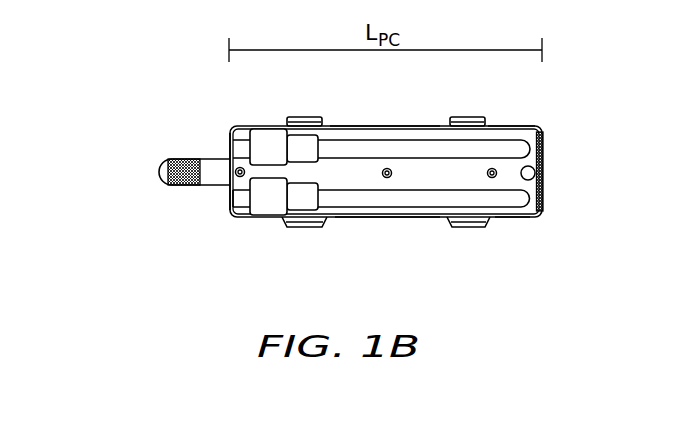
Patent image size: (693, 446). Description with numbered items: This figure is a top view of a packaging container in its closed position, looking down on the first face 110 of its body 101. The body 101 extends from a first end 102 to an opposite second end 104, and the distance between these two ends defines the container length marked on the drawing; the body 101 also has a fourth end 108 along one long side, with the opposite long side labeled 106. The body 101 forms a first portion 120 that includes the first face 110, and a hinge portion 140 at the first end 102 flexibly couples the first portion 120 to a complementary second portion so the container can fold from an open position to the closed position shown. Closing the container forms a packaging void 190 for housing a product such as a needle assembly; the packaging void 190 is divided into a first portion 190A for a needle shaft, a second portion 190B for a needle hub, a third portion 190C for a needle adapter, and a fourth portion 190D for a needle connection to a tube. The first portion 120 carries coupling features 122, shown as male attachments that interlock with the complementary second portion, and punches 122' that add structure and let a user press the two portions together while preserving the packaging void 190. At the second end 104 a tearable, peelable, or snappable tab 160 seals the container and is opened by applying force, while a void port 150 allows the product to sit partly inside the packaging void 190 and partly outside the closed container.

The body 101 is at (134, 89).
The first end 102 is at (542, 128).
The second end 104 is at (230, 131).
The bottom side 106 is at (412, 218).
The fourth end 108 is at (378, 127).
The first face 110 is at (507, 217).
The first portion 120 is at (493, 128).
The coupling feature 122 is at (461, 101).
The punch 122' is at (555, 120).
The hinge portion 140 is at (545, 188).
The void port 150 is at (230, 150).
The tearable, peelable, or snappable tab 160 is at (183, 187).
The packaging void 190 is at (330, 147).
The first portion of the packaging void 190A is at (528, 197).
The second portion of the packaging void 190B is at (320, 227).
The third portion of the packaging void 190C is at (270, 203).
The fourth portion of the packaging void 190D is at (237, 197).